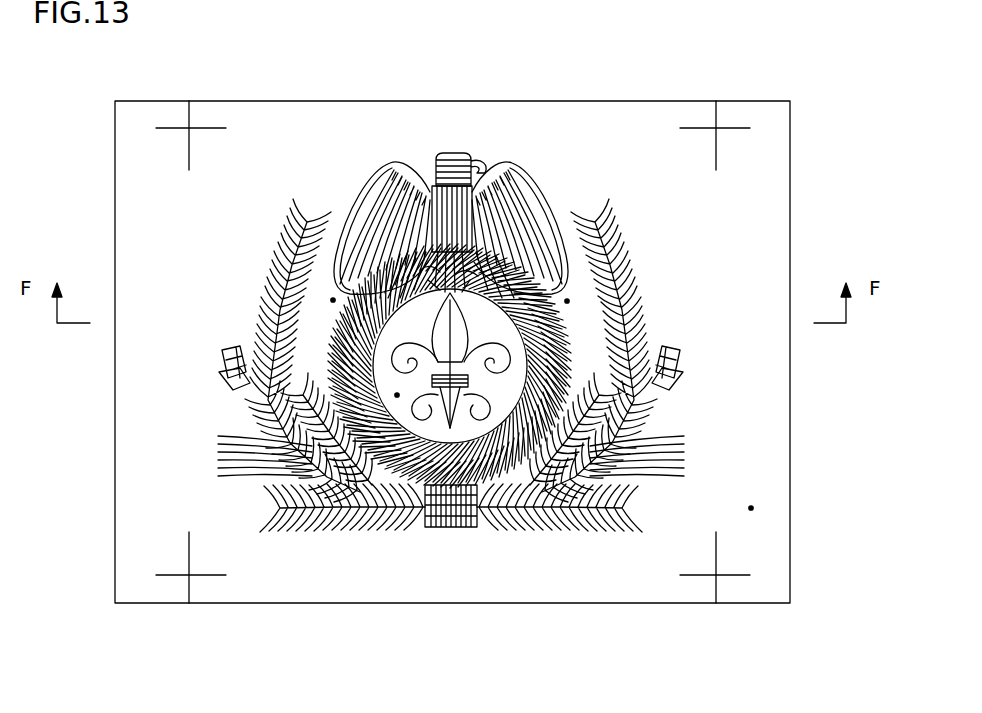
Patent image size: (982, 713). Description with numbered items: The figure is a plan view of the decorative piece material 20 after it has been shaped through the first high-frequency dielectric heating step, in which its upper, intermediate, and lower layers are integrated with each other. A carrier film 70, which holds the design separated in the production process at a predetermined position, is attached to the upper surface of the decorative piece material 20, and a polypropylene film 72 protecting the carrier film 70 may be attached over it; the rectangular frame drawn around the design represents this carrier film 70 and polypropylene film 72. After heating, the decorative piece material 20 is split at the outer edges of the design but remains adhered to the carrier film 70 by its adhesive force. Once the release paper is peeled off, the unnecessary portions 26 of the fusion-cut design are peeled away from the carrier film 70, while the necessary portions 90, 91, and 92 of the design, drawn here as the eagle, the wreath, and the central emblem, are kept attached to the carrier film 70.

The decorative piece material 20 is at (701, 431).
The unnecessary portions 26 is at (333, 300).
The carrier film 70 is at (512, 352).
The polypropylene film 72 is at (775, 150).
The necessary portion 90 is at (512, 177).
The necessary portion 91 is at (680, 355).
The necessary portion 92 is at (452, 440).